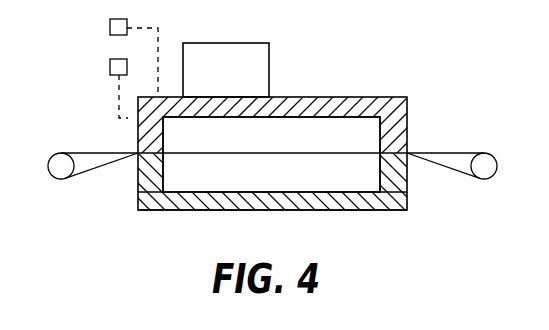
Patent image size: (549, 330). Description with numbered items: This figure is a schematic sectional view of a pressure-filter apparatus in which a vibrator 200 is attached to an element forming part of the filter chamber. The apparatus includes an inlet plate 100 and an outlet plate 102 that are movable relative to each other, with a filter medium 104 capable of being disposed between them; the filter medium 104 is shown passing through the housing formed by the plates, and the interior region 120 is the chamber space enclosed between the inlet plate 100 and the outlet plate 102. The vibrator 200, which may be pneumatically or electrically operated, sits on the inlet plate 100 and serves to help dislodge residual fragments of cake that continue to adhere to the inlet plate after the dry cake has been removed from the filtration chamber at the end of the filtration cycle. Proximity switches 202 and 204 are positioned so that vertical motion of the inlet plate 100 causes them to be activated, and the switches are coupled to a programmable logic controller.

The inlet plate 100 is at (292, 97).
The outlet plate 102 is at (197, 206).
The filter medium 104 is at (430, 153).
The chamber 120 is at (345, 147).
The vibrator 200 is at (259, 58).
The proximity switch 202 is at (110, 72).
The proximity switch 204 is at (110, 32).